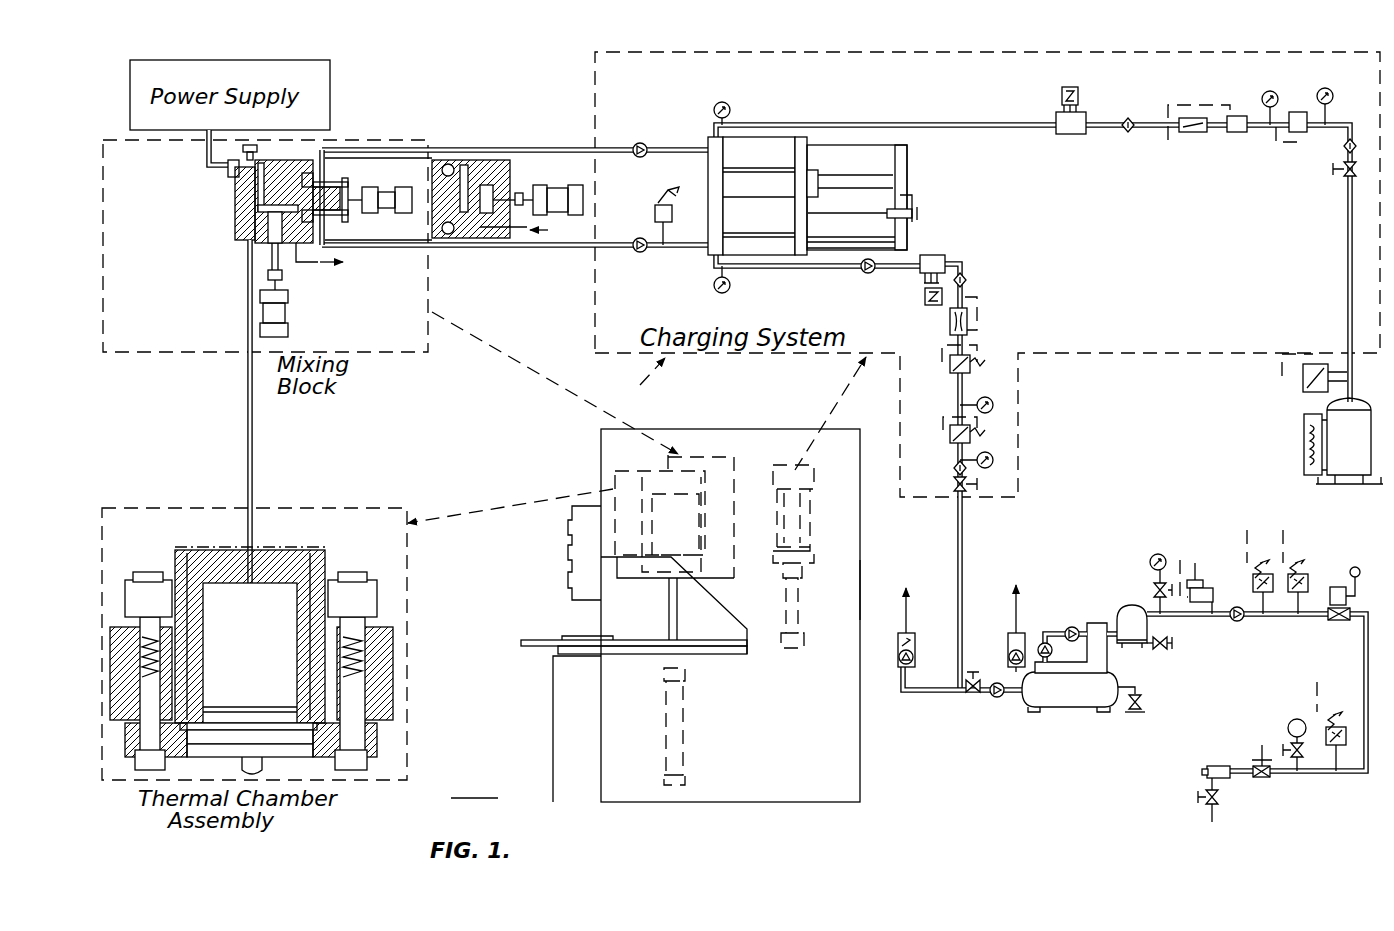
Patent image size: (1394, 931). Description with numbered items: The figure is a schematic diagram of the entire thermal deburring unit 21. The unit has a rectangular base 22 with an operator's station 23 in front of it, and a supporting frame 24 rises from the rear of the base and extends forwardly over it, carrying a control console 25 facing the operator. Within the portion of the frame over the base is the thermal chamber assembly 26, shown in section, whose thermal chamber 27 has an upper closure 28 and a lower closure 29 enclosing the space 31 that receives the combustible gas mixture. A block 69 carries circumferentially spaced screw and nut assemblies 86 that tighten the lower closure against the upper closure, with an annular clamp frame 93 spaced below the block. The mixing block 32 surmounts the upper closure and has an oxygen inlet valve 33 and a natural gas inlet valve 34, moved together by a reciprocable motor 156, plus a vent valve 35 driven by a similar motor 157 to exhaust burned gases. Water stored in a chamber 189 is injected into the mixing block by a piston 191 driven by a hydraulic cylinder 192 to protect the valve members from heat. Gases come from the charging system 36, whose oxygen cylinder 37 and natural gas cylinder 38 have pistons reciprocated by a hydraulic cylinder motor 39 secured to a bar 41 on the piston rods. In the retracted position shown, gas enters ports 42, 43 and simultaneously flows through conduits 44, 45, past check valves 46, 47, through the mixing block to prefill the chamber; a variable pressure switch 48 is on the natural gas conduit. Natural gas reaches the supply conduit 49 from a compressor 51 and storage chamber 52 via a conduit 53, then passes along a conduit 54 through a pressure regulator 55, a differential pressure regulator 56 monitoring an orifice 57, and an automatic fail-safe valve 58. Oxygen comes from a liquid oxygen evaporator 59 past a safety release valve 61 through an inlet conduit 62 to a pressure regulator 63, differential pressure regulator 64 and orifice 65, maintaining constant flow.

The thermal deburring unit 21 is at (876, 796).
The rectangular base 22 is at (565, 718).
The operator's station 23 is at (476, 798).
The supporting frame 24 is at (862, 588).
The control console 25 is at (590, 508).
The thermal chamber assembly 26 is at (739, 476).
The thermal chamber 27 is at (317, 573).
The upper closure 28 is at (224, 575).
The lower closure 29 is at (293, 763).
The space 31 is at (250, 665).
The mixing block 32 is at (672, 452).
The oxygen inlet valve 33 is at (340, 182).
The natural gas inlet valve 34 is at (338, 232).
The vent valve 35 is at (270, 253).
The charging system 36 is at (637, 417).
The oxygen cylinder 37 is at (757, 143).
The natural gas cylinder 38 is at (763, 250).
The hydraulic cylinder motor 39 is at (777, 177).
The bar 41 is at (907, 163).
The oxygen port 42 is at (712, 128).
The natural gas port 43 is at (707, 265).
The oxygen conduit 44 is at (548, 148).
The natural gas conduit 45 is at (545, 249).
The check valve 46 is at (638, 143).
The check valve 47 is at (639, 238).
The variable pressure switch 48 is at (656, 207).
The natural gas supply conduit 49 is at (1217, 815).
The compressor 51 is at (1100, 657).
The storage chamber 52 is at (1065, 700).
The conduit 53 is at (1362, 652).
The conduit 54 is at (960, 577).
The pressure regulator 55 is at (970, 428).
The differential pressure regulator 56 is at (968, 360).
The orifice 57 is at (966, 318).
The automatic fail-safe valve 58 is at (938, 260).
The liquid oxygen evaporator 59 is at (1350, 464).
The safety release valve 61 is at (1313, 391).
The inlet conduit 62 is at (1344, 286).
The pressure regulator 63 is at (1298, 112).
The differential pressure regulator 64 is at (1241, 116).
The orifice 65 is at (1194, 118).
The block 69 is at (385, 692).
The screw and nut assemblies 86 is at (376, 660).
The annular clamp frame 93 is at (130, 735).
The reciprocable motor 156 is at (386, 192).
The motor 157 is at (290, 317).
The chamber 189 is at (503, 180).
The piston 191 is at (486, 185).
The hydraulic cylinder 192 is at (560, 193).